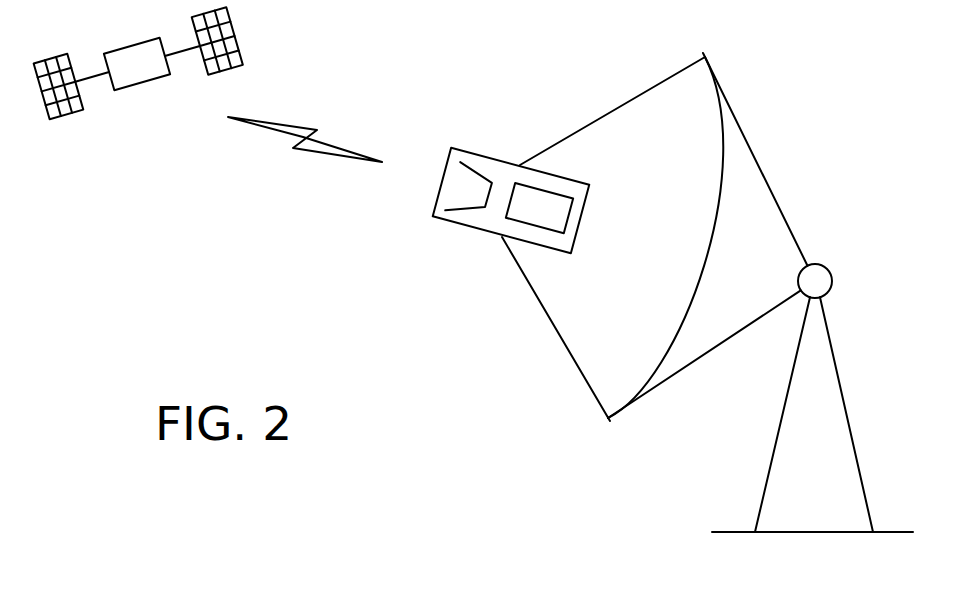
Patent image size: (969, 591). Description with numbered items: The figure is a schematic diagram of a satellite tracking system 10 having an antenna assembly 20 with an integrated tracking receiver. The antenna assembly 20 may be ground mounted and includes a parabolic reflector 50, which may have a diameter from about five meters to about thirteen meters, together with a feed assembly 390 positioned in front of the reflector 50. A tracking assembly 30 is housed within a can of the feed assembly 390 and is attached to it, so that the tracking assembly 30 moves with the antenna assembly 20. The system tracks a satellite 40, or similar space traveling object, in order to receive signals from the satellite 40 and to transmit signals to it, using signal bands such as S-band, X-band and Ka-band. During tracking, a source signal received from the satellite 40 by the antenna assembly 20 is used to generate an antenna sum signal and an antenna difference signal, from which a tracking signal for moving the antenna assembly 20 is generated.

The tracking system 10 is at (495, 33).
The antenna assembly 20 is at (645, 249).
The tracking assembly 30 is at (512, 180).
The satellite 40 is at (143, 73).
The reflector 50 is at (667, 353).
The feed assembly 390 is at (460, 227).